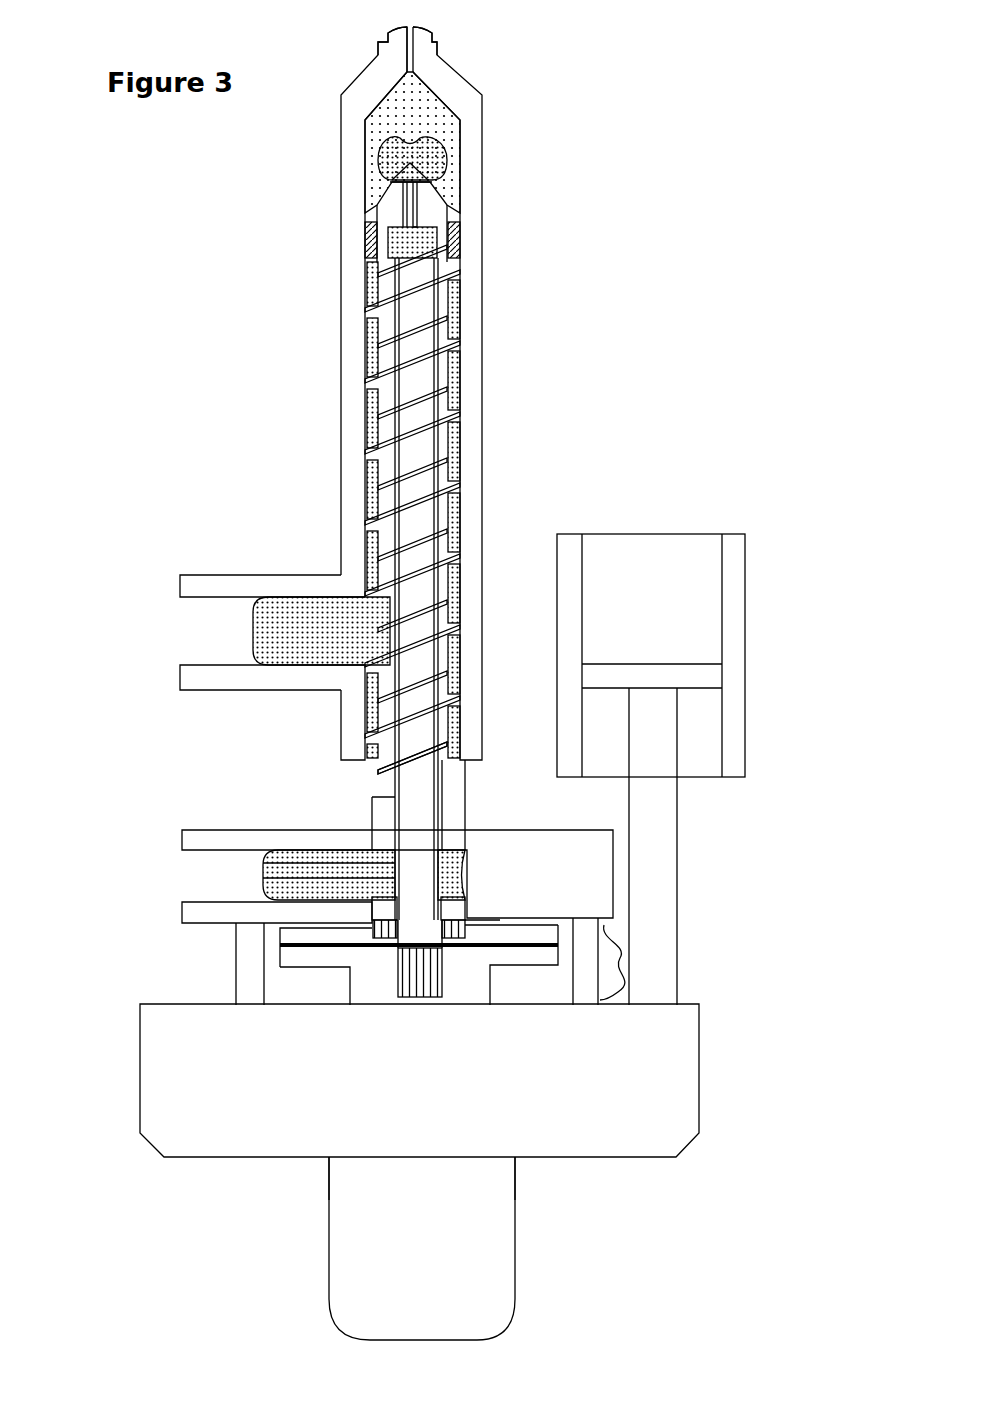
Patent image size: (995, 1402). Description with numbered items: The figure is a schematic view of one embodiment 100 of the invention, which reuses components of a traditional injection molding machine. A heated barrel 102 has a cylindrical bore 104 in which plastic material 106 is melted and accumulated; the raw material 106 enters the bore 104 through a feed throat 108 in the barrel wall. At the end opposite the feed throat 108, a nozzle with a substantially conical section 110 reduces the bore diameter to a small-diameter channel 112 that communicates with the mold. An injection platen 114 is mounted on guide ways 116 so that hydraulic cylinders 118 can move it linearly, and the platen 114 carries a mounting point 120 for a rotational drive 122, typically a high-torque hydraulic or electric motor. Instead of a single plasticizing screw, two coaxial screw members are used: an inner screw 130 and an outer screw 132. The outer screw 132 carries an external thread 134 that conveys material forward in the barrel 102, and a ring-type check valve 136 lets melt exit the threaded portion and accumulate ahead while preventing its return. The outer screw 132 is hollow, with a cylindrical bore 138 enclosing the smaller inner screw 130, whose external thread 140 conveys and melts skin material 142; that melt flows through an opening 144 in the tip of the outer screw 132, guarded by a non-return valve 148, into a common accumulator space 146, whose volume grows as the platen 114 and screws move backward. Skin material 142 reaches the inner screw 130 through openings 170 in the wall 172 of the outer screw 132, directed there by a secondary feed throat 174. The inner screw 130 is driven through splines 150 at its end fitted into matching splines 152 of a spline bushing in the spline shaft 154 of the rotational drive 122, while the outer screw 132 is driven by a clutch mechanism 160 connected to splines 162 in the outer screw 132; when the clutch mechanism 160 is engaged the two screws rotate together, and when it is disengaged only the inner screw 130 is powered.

The embodiment 100 is at (798, 1263).
The barrel 102 is at (483, 305).
The cylindrical bore 104 is at (383, 753).
The plastic material 106 is at (252, 643).
The feed throat 108 is at (190, 607).
The conical section 110 is at (457, 65).
The small-diameter channel 112 is at (411, 25).
The injection platen 114 is at (700, 1090).
The guide ways 116 is at (678, 877).
The hydraulic cylinders 118 is at (745, 640).
The mounting point 120 is at (515, 1158).
The rotational drive 122 is at (516, 1265).
The inner screw 130 is at (367, 363).
The outer screw 132 is at (447, 453).
The external thread 134 is at (448, 345).
The ring-type check valve 136 is at (460, 233).
The cylindrical bore 138 is at (382, 776).
The external thread 140 is at (394, 427).
The plastic material 142 is at (263, 878).
The opening 144 is at (376, 167).
The common accumulator space 146 is at (427, 123).
The non-return valve 148 is at (417, 165).
The splines 150 is at (395, 970).
The splines 152 is at (397, 963).
The spline shaft 154 is at (350, 988).
The clutch mechanism 160 is at (630, 950).
The splines 162 is at (395, 928).
The openings 170 is at (263, 893).
The wall 172 is at (263, 863).
The secondary feed throat 174 is at (182, 837).